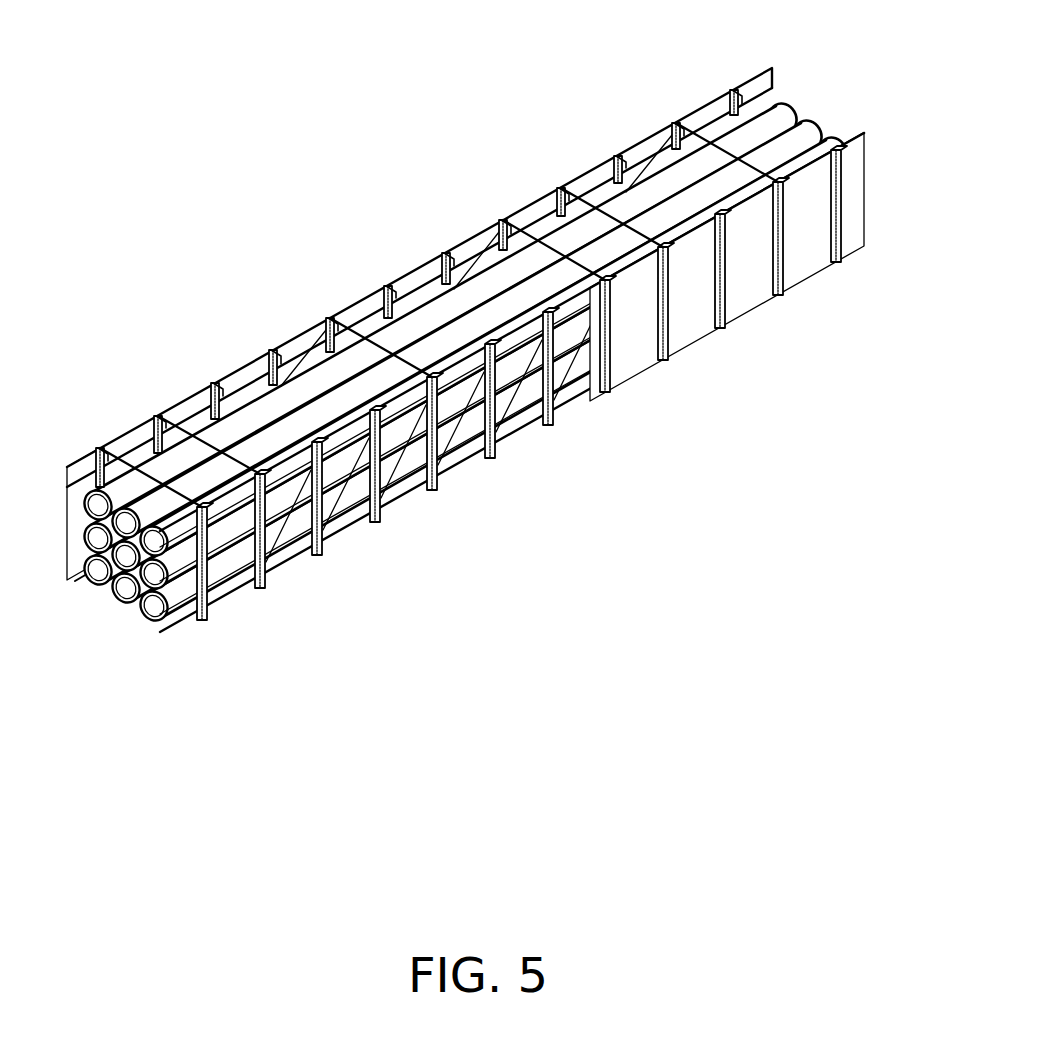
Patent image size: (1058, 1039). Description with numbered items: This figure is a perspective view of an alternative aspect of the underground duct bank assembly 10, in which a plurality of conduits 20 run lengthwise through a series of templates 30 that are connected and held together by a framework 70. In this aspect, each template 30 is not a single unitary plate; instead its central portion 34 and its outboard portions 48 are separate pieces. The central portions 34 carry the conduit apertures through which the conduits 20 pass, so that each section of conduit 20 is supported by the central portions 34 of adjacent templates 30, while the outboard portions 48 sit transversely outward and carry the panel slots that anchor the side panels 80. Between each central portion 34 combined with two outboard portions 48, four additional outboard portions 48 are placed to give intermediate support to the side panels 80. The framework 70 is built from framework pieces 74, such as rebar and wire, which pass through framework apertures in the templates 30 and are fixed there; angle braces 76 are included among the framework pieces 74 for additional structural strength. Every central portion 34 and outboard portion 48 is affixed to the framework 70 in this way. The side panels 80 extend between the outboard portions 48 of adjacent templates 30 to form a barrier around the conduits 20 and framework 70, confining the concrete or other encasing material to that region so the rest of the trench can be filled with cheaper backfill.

The underground duct bank assembly 10 is at (566, 114).
The conduit 20 is at (790, 105).
The template 30 is at (328, 316).
The central portion 34 is at (381, 345).
The outboard portion 48 is at (441, 252).
The framework 70 is at (655, 132).
The framework piece 74 is at (481, 252).
The angle brace 76 is at (290, 368).
The side panel 80 is at (632, 352).